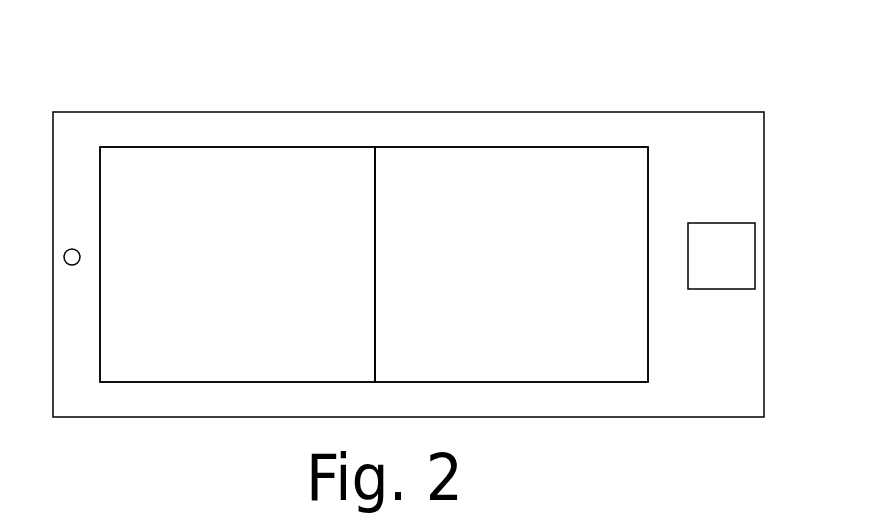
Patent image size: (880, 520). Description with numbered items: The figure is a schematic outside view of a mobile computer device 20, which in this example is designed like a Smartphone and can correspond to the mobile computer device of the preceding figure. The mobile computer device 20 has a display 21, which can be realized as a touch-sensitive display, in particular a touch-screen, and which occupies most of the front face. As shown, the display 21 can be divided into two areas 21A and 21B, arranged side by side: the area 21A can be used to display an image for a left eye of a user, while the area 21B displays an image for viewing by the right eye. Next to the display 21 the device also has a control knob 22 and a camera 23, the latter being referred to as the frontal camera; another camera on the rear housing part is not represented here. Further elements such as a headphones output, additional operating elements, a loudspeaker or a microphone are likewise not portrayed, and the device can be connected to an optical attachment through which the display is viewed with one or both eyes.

The mobile computer device 20 is at (499, 113).
The display 21 is at (157, 145).
The area 21A is at (248, 268).
The area 21B is at (538, 268).
The control knob 22 is at (715, 223).
The camera 23 is at (67, 247).